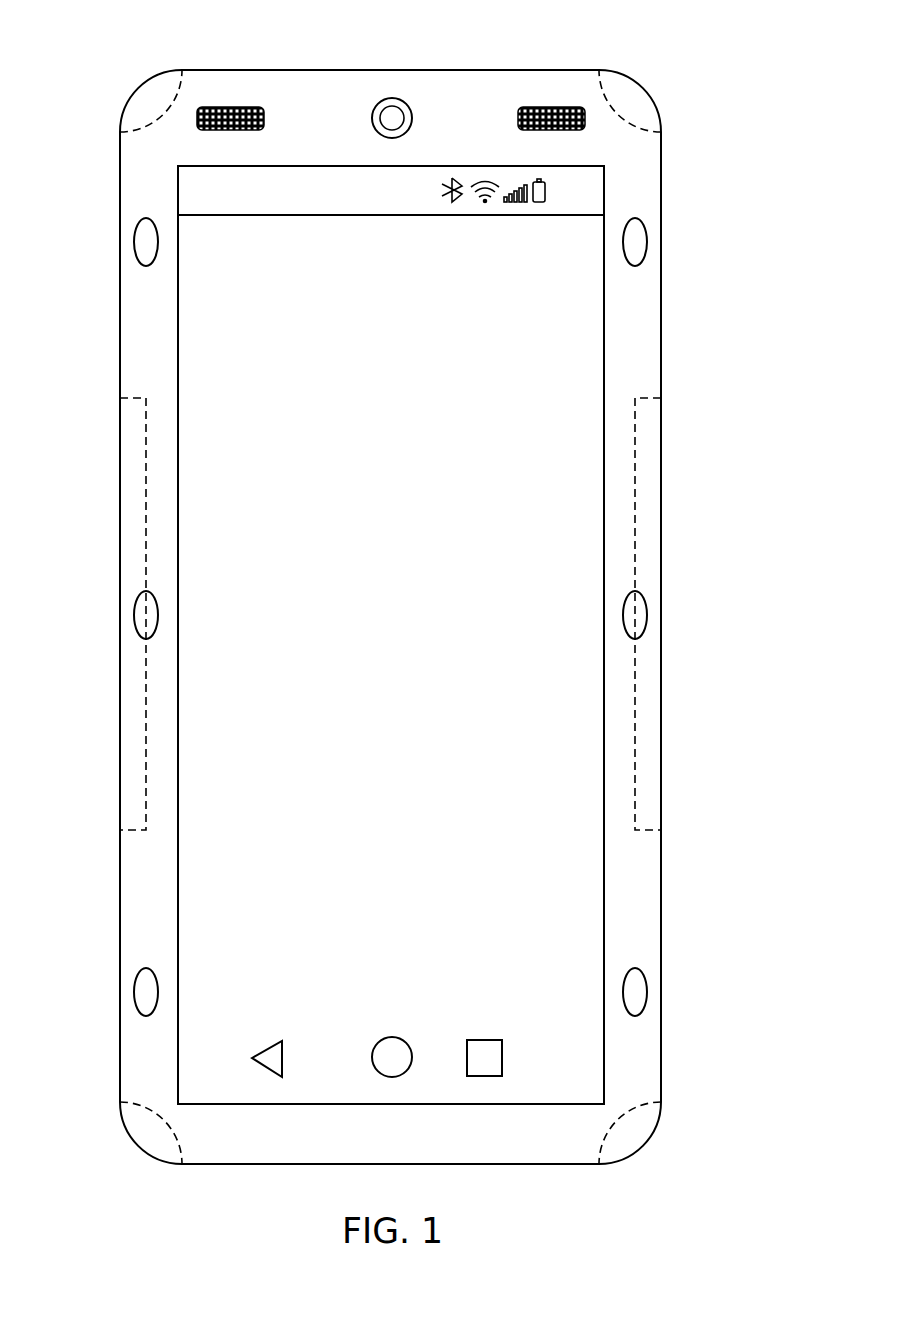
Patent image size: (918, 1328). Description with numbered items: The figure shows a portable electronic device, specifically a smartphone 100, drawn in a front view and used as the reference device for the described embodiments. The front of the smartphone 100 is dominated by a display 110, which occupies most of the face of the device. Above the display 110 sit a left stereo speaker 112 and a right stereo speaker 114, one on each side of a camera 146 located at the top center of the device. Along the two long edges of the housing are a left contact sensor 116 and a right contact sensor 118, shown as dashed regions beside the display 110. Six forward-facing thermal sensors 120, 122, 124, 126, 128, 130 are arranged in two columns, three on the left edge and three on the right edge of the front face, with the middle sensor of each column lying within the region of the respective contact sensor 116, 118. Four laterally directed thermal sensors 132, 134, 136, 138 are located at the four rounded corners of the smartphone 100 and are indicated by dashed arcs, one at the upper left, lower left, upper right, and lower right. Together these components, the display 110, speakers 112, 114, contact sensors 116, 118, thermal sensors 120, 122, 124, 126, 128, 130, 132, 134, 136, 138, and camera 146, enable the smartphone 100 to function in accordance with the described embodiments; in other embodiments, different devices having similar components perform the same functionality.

The smartphone 100 is at (680, 37).
The display 110 is at (565, 305).
The left stereo speaker 112 is at (264, 118).
The right stereo speaker 114 is at (518, 118).
The left contact sensor 116 is at (140, 722).
The right contact sensor 118 is at (650, 712).
The forward-facing thermal sensor 120 is at (142, 243).
The forward-facing thermal sensor 122 is at (142, 616).
The forward-facing thermal sensor 124 is at (142, 993).
The forward-facing thermal sensor 126 is at (640, 242).
The forward-facing thermal sensor 128 is at (640, 615).
The forward-facing thermal sensor 130 is at (640, 992).
The laterally directed thermal sensor 132 is at (150, 100).
The laterally directed thermal sensor 134 is at (150, 1133).
The laterally directed thermal sensor 136 is at (632, 100).
The laterally directed thermal sensor 138 is at (632, 1133).
The camera 146 is at (392, 97).